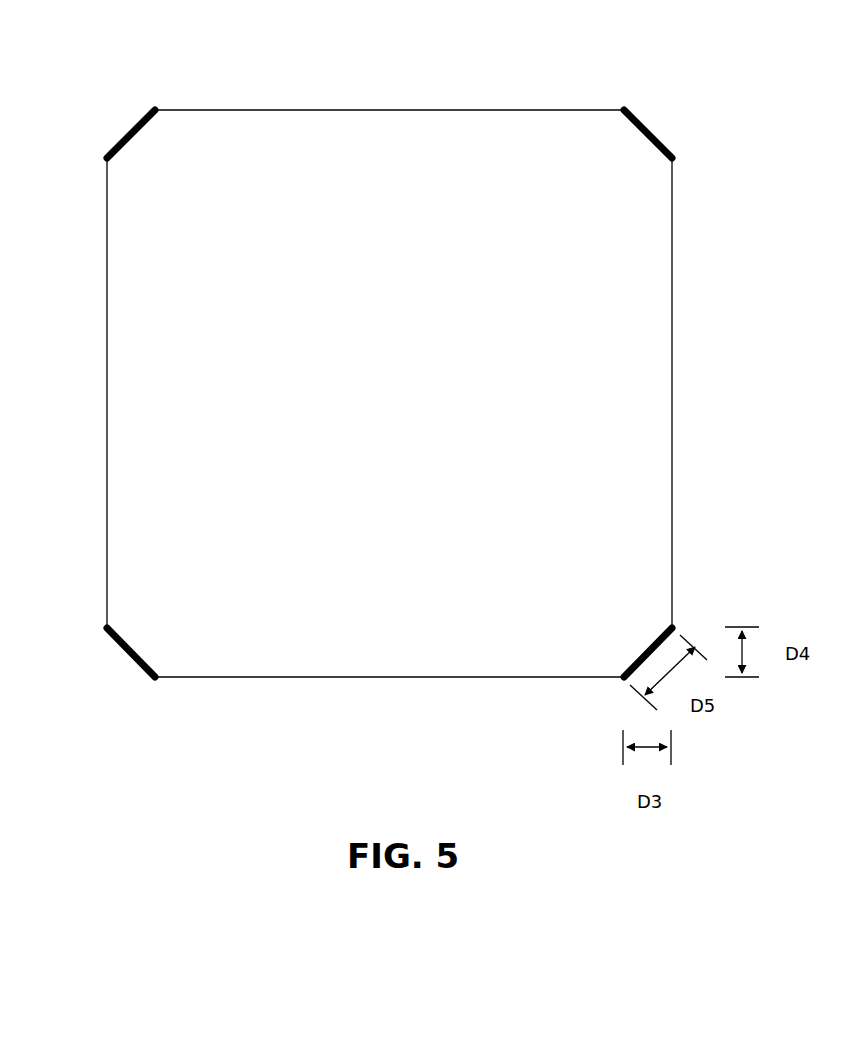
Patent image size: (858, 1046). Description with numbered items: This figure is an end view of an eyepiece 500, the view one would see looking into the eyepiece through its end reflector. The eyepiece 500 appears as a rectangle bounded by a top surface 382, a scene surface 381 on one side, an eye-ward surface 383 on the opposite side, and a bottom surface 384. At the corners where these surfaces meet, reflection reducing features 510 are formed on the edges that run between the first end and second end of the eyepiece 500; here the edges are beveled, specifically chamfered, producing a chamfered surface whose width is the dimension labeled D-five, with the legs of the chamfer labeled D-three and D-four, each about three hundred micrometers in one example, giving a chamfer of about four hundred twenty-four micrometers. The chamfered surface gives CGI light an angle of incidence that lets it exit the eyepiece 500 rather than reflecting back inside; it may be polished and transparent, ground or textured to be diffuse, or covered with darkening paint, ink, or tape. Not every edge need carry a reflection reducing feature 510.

The eyepiece 500 is at (438, 385).
The reflection reducing feature 510 is at (118, 138).
The scene surface 381 is at (107, 505).
The top surface 382 is at (300, 110).
The eye-ward surface 383 is at (672, 507).
The bottom surface 384 is at (355, 677).